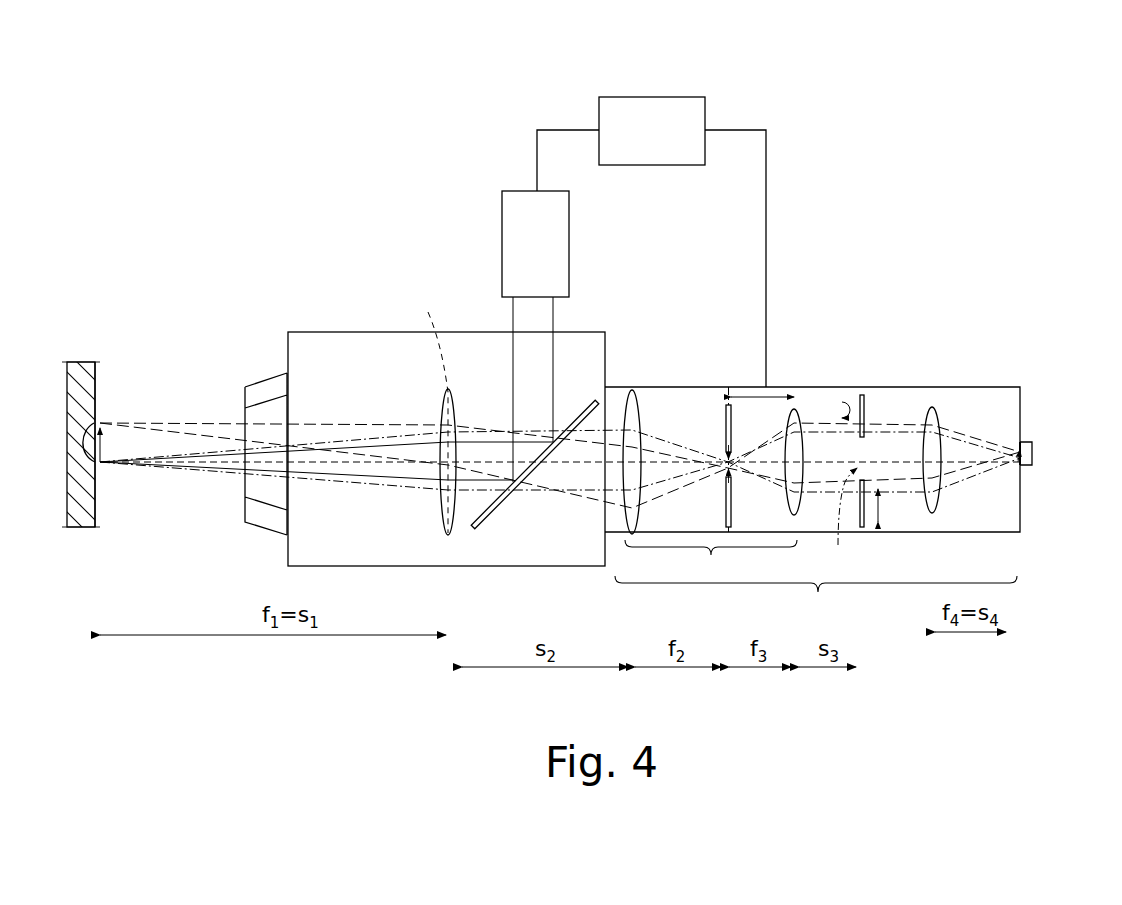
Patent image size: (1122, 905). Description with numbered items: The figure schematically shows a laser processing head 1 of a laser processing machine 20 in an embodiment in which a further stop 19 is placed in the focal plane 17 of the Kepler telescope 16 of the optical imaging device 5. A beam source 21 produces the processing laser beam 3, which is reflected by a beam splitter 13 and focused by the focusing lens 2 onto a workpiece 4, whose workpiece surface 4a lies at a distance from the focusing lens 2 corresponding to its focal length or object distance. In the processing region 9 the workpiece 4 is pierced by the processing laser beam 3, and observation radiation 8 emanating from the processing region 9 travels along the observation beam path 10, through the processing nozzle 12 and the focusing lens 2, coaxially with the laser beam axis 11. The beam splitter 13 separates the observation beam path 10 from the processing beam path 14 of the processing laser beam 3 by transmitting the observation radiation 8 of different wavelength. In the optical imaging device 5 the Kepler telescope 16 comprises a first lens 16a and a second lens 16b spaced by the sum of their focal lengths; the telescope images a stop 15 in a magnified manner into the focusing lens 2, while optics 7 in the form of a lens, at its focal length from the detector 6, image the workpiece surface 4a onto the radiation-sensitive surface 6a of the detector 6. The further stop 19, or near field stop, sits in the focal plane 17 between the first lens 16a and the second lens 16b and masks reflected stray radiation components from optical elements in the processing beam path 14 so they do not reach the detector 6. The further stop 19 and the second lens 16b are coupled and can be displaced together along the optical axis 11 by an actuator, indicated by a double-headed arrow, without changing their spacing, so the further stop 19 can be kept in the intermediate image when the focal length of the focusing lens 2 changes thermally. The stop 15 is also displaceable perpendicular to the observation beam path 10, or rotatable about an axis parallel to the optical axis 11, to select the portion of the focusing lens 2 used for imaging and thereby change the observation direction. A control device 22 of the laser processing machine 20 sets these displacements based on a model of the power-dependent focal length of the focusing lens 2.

The laser processing head 1 is at (1022, 360).
The focusing lens 2 is at (440, 440).
The processing laser beam 3 is at (513, 322).
The workpiece 4 is at (84, 372).
The workpiece surface 4a is at (96, 390).
The optical imaging device 5 is at (812, 503).
The detector 6 is at (1033, 460).
The radiation-sensitive surface 6a is at (1012, 430).
The optics 7 is at (935, 425).
The observation radiation 8 is at (913, 437).
The processing region 9 is at (100, 455).
The observation beam path 10 is at (834, 410).
The laser beam axis 11 is at (338, 460).
The processing nozzle 12 is at (265, 390).
The beam splitter 13 is at (580, 400).
The processing beam path 14 is at (318, 408).
The stop 15 is at (862, 398).
The Kepler telescope 16 is at (711, 562).
The first lens 16a is at (630, 392).
The second lens 16b is at (793, 410).
The focal plane 17 is at (730, 362).
The further stop 19 is at (726, 408).
The laser processing machine 20 is at (990, 172).
The beam source 21 is at (553, 228).
The control device 22 is at (658, 120).